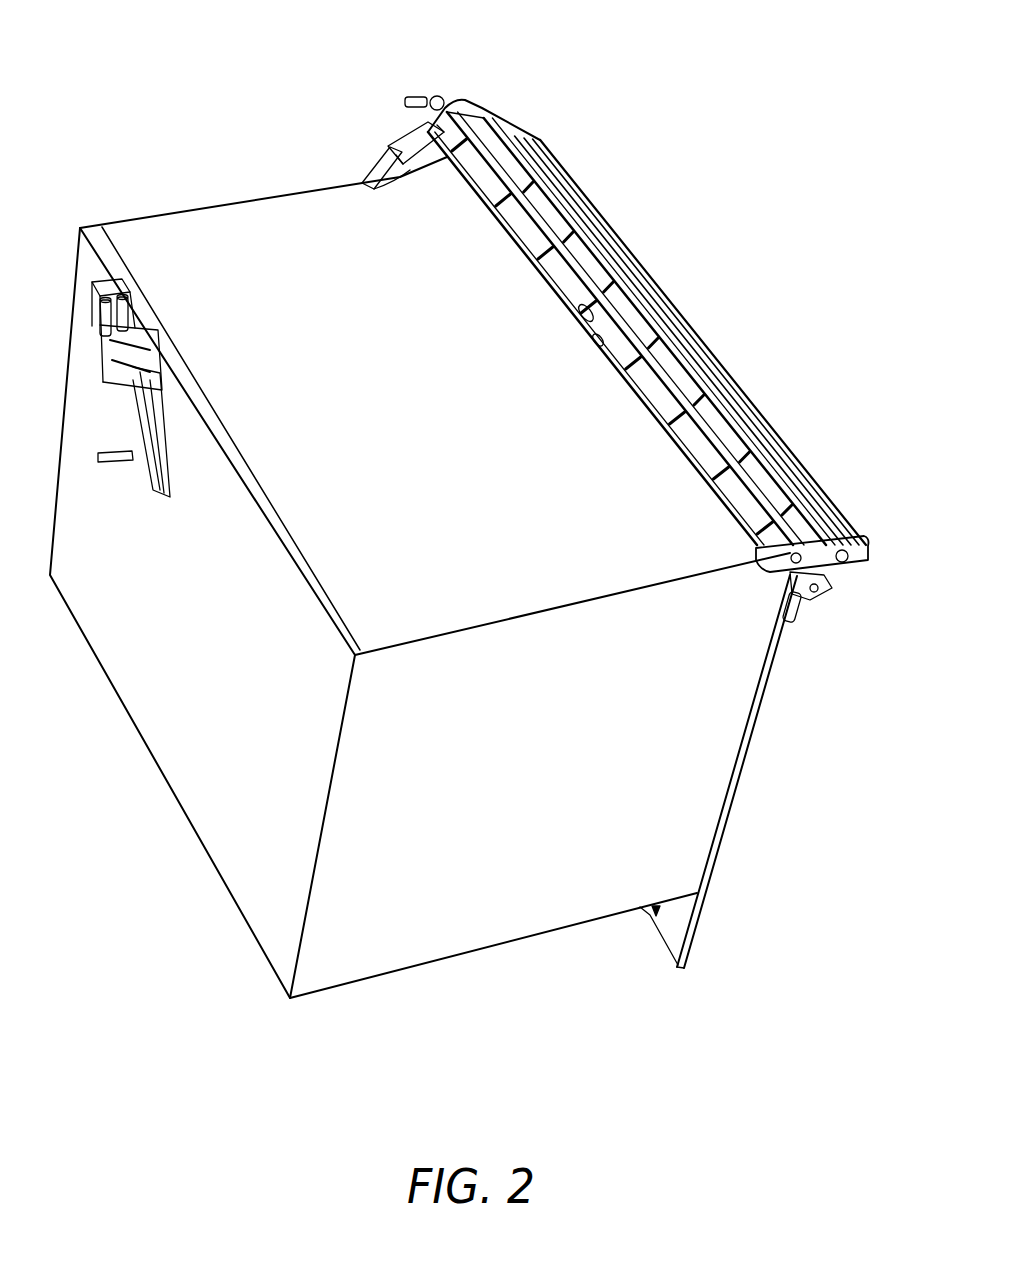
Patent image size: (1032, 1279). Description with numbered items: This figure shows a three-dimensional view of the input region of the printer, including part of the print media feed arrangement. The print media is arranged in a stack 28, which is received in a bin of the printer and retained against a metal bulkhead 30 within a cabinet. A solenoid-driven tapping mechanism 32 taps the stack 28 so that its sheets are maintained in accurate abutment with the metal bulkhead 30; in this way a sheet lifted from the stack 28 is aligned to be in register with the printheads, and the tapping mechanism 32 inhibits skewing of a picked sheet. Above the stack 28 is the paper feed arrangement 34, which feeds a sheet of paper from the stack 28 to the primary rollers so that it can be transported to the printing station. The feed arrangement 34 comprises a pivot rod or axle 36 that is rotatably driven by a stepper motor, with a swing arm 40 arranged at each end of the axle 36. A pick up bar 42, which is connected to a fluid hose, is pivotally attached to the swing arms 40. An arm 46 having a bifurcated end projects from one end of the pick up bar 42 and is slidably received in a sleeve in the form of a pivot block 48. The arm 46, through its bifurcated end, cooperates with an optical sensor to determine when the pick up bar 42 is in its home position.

The stack 28 is at (497, 934).
The metal bulkhead 30 is at (693, 930).
The tapping mechanism 32 is at (127, 483).
The paper feed arrangement 34 is at (614, 326).
The pivot rod or axle 36 is at (858, 563).
The swing arm 40 is at (822, 574).
The pick up bar 42 is at (720, 495).
The arm 46 is at (377, 158).
The pivot block 48 is at (405, 130).